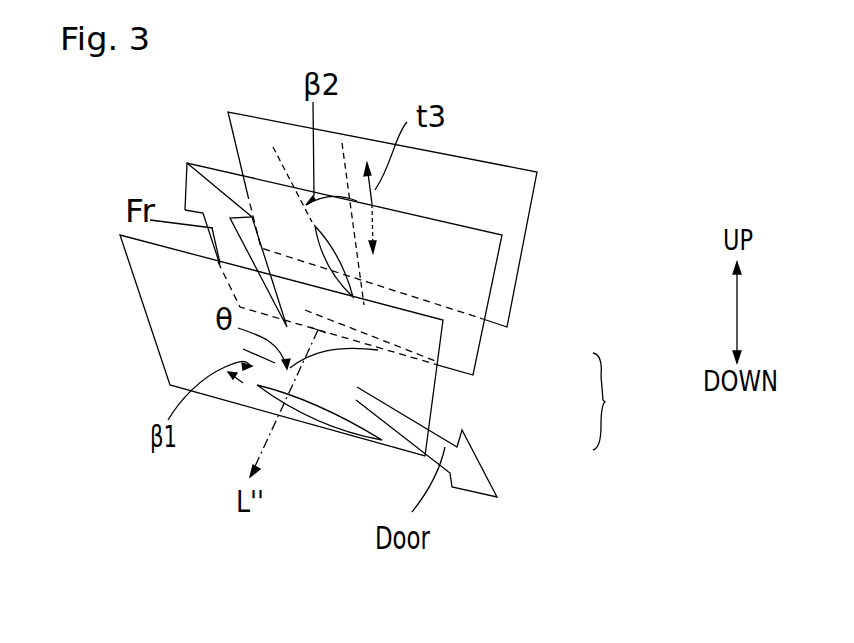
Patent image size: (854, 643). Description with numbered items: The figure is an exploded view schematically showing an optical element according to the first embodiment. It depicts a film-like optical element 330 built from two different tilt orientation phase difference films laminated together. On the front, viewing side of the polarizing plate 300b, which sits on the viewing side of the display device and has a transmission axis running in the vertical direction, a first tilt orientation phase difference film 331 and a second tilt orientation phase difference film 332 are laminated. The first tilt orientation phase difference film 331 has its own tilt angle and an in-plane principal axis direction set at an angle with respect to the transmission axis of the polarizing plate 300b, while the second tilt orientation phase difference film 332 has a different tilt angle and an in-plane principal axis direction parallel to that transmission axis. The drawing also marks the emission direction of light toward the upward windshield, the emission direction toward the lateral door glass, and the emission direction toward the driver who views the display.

The polarizing plate 300b is at (505, 211).
The film-like optical element 330 is at (625, 401).
The first tilt orientation phase difference film 331 is at (410, 395).
The second tilt orientation phase difference film 332 is at (455, 355).